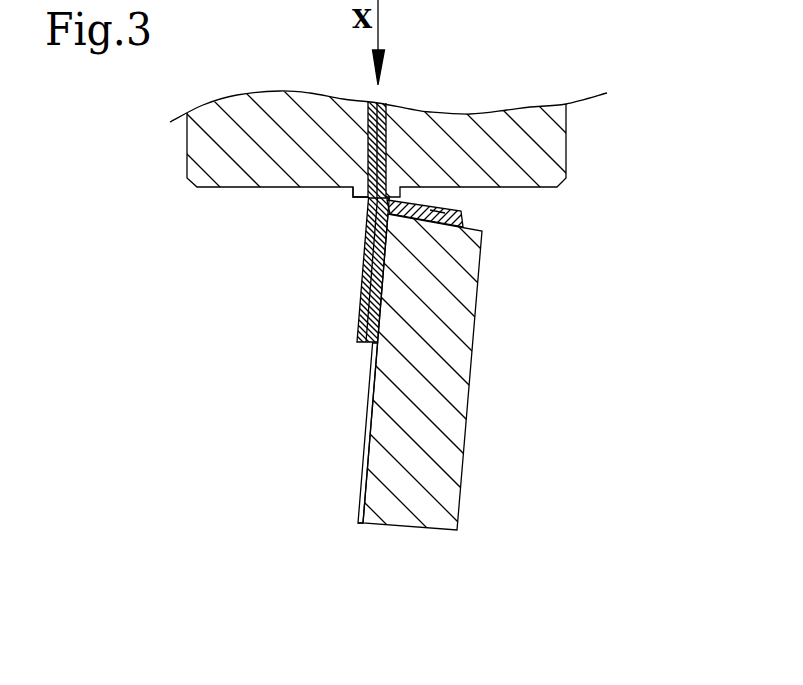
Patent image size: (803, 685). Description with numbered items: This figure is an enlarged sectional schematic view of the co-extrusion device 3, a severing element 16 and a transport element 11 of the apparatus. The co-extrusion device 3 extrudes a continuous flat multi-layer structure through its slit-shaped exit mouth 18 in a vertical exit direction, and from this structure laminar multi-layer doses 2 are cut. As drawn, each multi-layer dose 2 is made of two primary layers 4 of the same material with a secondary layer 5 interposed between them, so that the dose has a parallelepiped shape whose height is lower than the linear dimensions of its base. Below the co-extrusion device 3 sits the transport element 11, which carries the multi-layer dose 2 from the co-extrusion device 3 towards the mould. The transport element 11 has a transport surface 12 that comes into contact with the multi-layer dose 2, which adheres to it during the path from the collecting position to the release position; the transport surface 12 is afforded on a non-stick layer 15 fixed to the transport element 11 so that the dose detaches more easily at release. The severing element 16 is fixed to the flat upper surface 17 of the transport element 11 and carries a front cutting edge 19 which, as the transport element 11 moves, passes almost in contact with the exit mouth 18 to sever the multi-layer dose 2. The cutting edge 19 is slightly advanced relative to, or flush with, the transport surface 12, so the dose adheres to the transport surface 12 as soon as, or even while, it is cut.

The multi-layer dose 2 is at (345, 293).
The co-extrusion device 3 is at (527, 143).
The primary layer 4 is at (357, 323).
The secondary layer 5 is at (357, 261).
The transport element 11 is at (443, 348).
The transport surface 12 is at (360, 487).
The non-stick layer 15 is at (360, 523).
The severing element 16 is at (437, 213).
The flat upper surface 17 is at (470, 225).
The exit mouth 18 is at (360, 197).
The front cutting edge 19 is at (388, 200).